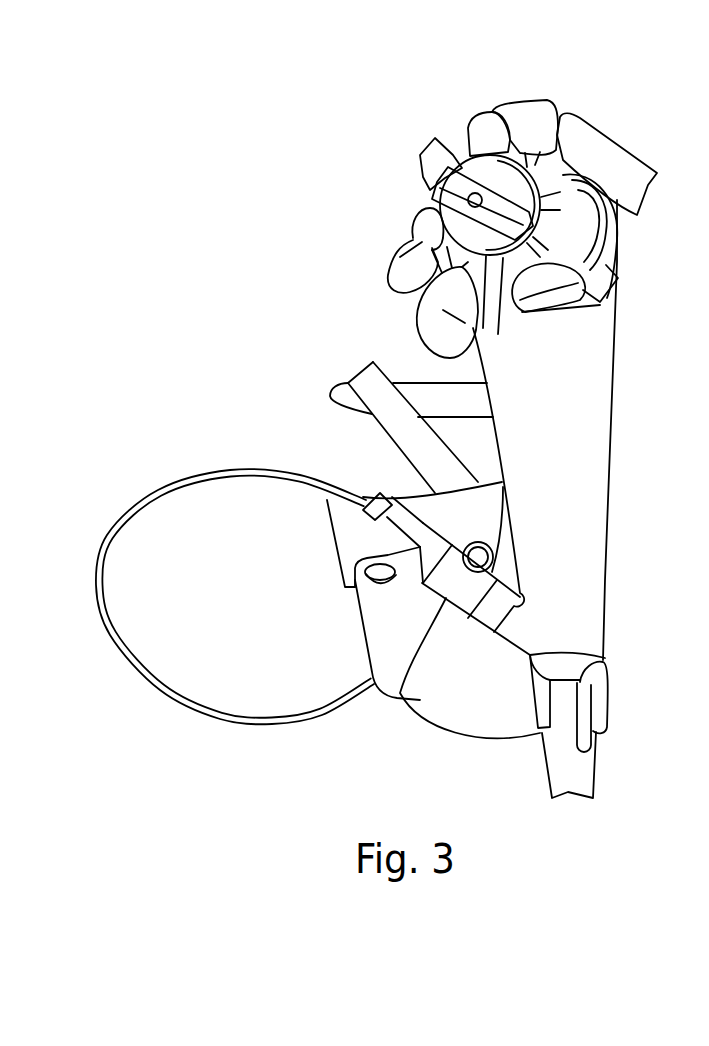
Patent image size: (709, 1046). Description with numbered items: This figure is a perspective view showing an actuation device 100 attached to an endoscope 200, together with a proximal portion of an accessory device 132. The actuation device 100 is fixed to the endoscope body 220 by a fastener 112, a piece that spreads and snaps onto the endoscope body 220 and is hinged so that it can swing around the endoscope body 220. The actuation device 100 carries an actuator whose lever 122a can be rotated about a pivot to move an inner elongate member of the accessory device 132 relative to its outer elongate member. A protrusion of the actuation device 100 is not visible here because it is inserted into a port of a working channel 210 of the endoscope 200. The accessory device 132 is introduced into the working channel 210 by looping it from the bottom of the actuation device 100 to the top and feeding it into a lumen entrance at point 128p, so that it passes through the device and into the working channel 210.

The endoscope 200 is at (420, 168).
The actuation device 100 is at (326, 597).
The accessory device 132 is at (181, 471).
The lever 122a is at (386, 419).
The lumen entrance point 128p is at (368, 500).
The working channel 210 is at (463, 556).
The endoscope body 220 is at (563, 720).
The fastener 112 is at (600, 687).